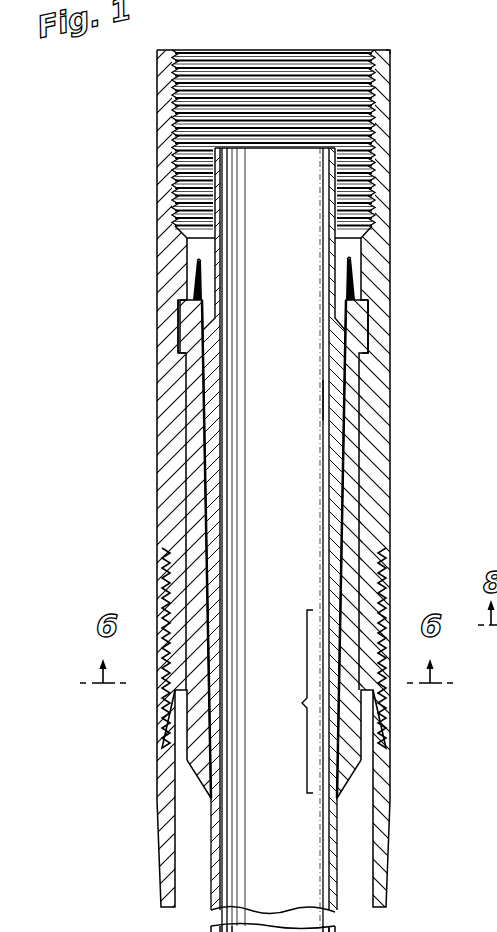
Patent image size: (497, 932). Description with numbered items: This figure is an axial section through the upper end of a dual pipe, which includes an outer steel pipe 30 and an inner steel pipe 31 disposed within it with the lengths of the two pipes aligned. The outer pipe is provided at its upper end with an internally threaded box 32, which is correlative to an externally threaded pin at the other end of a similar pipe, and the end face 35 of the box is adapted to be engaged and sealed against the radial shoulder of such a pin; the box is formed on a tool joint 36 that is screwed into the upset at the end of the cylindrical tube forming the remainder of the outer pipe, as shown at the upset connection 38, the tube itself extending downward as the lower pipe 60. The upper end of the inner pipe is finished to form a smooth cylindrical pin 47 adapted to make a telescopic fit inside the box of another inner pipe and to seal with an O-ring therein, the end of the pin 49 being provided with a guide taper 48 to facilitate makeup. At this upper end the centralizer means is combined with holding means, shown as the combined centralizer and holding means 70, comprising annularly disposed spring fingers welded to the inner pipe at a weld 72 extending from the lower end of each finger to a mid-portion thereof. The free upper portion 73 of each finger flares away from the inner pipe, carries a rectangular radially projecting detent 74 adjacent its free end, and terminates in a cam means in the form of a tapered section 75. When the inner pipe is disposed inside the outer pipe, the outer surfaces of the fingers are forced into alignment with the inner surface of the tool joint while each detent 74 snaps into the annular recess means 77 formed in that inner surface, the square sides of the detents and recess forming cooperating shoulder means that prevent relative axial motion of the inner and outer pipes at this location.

The outer steel pipe 30 is at (167, 864).
The inner steel pipe 31 is at (328, 850).
The internally threaded box 32 is at (386, 88).
The end face 35 is at (384, 48).
The tool joint 36 is at (378, 371).
The upset connection 38 is at (378, 582).
The smooth cylindrical pin 47 is at (381, 148).
The guide taper 48 is at (335, 153).
The end of the pin 49 is at (330, 148).
The lower pipe 60 is at (412, 931).
The combined centralizer and holding means 70 is at (350, 447).
The weld 72 is at (290, 701).
The free upper portion 73 is at (326, 398).
The detent 74 is at (366, 308).
The tapered section 75 is at (356, 268).
The annular recess means 77 is at (366, 330).